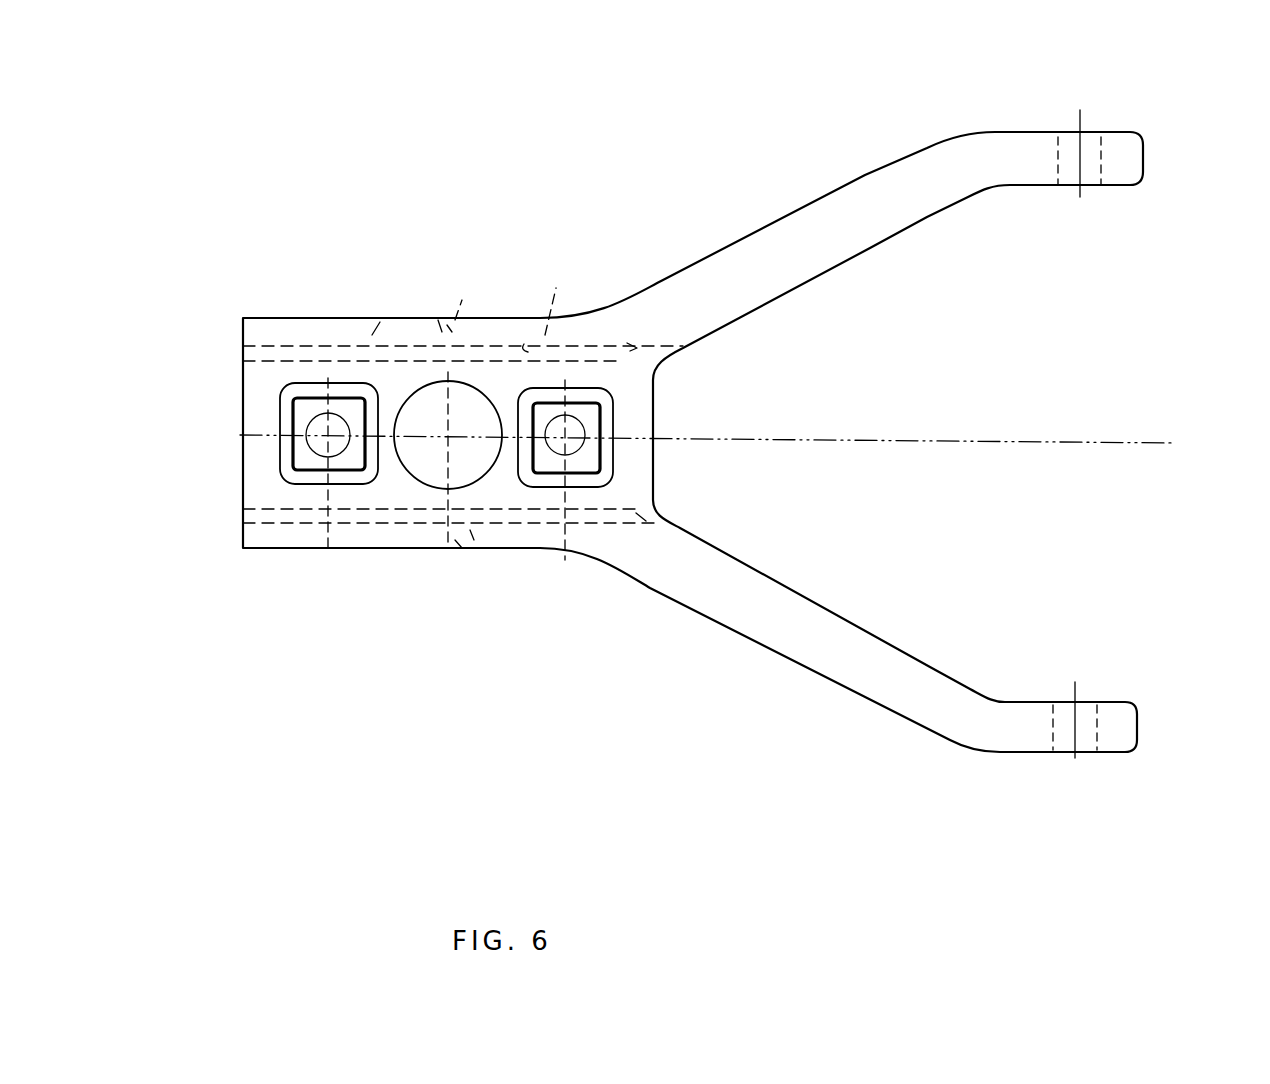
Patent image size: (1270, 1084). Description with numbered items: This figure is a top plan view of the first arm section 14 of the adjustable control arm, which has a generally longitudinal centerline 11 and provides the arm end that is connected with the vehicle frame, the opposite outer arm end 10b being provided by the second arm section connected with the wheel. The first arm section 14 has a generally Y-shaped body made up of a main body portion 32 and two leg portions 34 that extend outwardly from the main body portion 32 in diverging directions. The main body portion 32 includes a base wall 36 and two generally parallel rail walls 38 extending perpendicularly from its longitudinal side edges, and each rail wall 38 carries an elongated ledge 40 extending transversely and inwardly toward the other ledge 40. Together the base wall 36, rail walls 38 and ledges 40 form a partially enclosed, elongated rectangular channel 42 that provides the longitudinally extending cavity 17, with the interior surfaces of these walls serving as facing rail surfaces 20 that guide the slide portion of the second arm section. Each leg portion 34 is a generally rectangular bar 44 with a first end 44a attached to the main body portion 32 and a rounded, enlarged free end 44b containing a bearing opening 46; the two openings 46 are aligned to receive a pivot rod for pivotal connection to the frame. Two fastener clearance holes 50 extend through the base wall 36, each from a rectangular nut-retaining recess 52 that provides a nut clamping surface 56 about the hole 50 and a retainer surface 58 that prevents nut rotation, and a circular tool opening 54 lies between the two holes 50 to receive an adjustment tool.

The outer arm end 10b is at (1146, 165).
The longitudinal centerline 11 is at (1160, 443).
The first arm section 14 is at (367, 138).
The cavity 17 is at (293, 368).
The rail surfaces 20 is at (284, 610).
The main body portion 32 is at (350, 566).
The leg portions 34 is at (830, 152).
The base wall 36 is at (258, 364).
The rail walls 38 is at (322, 320).
The ledges 40 is at (372, 335).
The channel 42 is at (245, 451).
The bar 44 is at (786, 224).
The first end 44a is at (660, 305).
The free end 44b is at (1122, 140).
The bearing opening 46 is at (1098, 160).
The fastener clearance holes 50 is at (318, 428).
The nut-retaining recesses 52 is at (302, 410).
The tool opening 54 is at (472, 392).
The nut clamping surface 56 is at (353, 413).
The retainer surface 58 is at (597, 414).